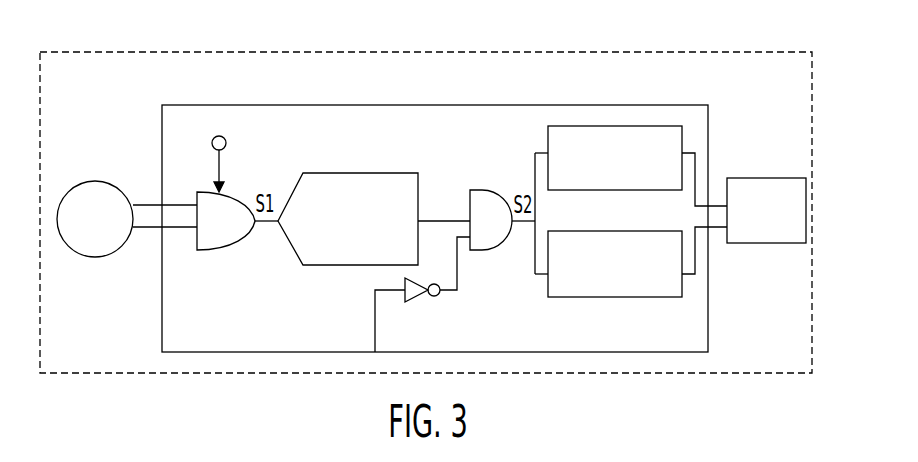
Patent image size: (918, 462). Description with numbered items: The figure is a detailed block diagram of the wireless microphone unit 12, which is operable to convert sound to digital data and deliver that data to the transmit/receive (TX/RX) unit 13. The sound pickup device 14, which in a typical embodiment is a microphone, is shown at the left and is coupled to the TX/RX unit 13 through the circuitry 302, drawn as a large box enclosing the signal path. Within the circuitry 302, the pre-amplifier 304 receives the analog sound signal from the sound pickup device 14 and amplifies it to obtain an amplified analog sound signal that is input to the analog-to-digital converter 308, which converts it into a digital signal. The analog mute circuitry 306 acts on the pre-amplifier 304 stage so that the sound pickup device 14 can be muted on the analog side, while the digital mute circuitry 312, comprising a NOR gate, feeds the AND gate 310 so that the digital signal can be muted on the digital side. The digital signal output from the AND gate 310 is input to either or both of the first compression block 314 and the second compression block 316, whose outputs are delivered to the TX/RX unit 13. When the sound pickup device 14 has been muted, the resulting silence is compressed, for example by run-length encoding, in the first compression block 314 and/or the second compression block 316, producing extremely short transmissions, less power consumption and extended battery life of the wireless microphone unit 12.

The wireless microphone unit 12 is at (590, 52).
The transmit/receive (TX/RX) unit 13 is at (765, 178).
The sound pickup device 14 is at (96, 181).
The circuitry 302 is at (474, 105).
The pre-amplifier 304 is at (216, 250).
The analog mute circuitry 306 is at (226, 141).
The analog-to-digital converter 308 is at (385, 172).
The AND gate 310 is at (483, 190).
The digital mute circuitry 312 is at (417, 297).
The first compression block 314 is at (620, 126).
The second compression block 316 is at (620, 297).